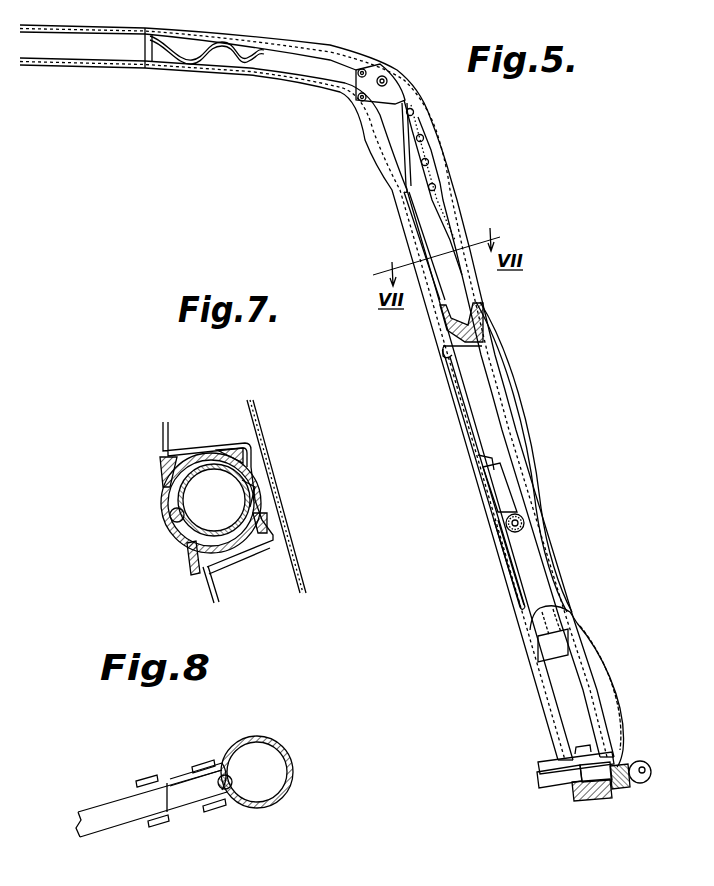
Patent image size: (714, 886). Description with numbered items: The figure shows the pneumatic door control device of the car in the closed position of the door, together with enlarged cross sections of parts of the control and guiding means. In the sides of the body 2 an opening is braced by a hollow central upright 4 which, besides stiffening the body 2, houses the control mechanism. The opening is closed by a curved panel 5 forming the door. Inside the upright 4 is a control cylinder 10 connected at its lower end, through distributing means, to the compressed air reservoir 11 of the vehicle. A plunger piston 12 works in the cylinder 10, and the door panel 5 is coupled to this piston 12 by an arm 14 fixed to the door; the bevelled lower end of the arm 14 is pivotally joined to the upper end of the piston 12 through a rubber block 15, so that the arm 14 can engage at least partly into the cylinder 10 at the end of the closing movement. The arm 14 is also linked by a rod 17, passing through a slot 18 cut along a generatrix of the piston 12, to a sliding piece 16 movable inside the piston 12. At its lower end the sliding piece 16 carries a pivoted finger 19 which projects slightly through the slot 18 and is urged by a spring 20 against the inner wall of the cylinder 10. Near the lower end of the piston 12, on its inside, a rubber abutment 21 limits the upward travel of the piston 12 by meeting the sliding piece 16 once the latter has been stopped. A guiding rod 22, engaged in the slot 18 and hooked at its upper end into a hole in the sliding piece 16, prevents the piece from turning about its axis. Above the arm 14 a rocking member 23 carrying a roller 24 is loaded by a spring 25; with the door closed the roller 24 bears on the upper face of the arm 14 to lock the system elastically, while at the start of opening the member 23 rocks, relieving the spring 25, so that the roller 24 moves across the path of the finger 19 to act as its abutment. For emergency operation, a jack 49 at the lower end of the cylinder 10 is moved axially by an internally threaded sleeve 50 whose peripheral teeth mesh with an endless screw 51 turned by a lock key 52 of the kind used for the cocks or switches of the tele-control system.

In FIG. 7, the body 2 is at (267, 432).
In FIG. 7, the upright 4 is at (232, 552).
In FIG. 5, the panel 5 is at (523, 436).
In FIG. 5, the control cylinder 10 is at (496, 539).
In FIG. 7, the control cylinder 10 is at (186, 531).
In FIG. 5, the compressed air reservoir 11 is at (580, 626).
In FIG. 5, the plunger piston 12 is at (592, 672).
In FIG. 8, the plunger piston 12 is at (290, 770).
In FIG. 5, the arm 14 is at (393, 168).
In FIG. 7, the arm 14 is at (210, 462).
In FIG. 5, the rubber block 15 is at (473, 318).
In FIG. 5, the sliding piece 16 is at (478, 456).
In FIG. 5, the rod 17 is at (416, 238).
In FIG. 7, the rod 17 is at (172, 518).
In FIG. 5, the slot 18 is at (507, 573).
In FIG. 5, the pivoted finger 19 is at (490, 493).
In FIG. 5, the spring 20 is at (492, 490).
In FIG. 5, the abutment 21 is at (548, 606).
In FIG. 5, the rod 22 is at (462, 428).
In FIG. 8, the rod 22 is at (230, 802).
In FIG. 5, the rocking member 23 is at (370, 78).
In FIG. 8, the rocking member 23 is at (190, 808).
In FIG. 5, the roller 24 is at (388, 84).
In FIG. 8, the roller 24 is at (202, 775).
In FIG. 5, the spring 25 is at (297, 50).
In FIG. 5, the jack 49 is at (606, 748).
In FIG. 5, the sleeve 50 is at (585, 767).
In FIG. 5, the endless screw 51 is at (588, 797).
In FIG. 5, the lock key 52 is at (642, 780).